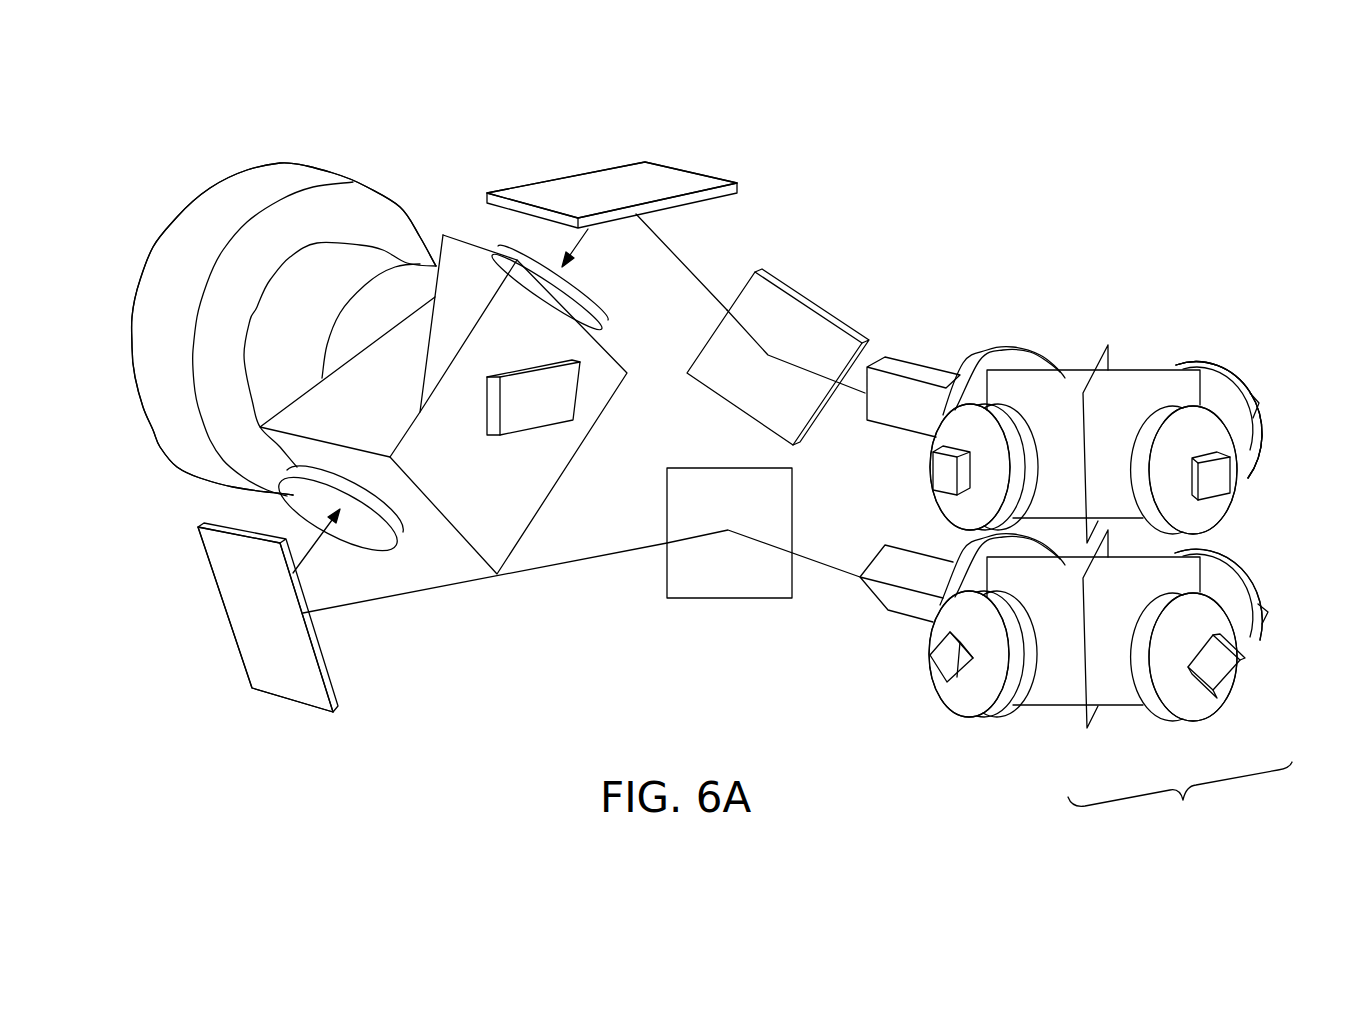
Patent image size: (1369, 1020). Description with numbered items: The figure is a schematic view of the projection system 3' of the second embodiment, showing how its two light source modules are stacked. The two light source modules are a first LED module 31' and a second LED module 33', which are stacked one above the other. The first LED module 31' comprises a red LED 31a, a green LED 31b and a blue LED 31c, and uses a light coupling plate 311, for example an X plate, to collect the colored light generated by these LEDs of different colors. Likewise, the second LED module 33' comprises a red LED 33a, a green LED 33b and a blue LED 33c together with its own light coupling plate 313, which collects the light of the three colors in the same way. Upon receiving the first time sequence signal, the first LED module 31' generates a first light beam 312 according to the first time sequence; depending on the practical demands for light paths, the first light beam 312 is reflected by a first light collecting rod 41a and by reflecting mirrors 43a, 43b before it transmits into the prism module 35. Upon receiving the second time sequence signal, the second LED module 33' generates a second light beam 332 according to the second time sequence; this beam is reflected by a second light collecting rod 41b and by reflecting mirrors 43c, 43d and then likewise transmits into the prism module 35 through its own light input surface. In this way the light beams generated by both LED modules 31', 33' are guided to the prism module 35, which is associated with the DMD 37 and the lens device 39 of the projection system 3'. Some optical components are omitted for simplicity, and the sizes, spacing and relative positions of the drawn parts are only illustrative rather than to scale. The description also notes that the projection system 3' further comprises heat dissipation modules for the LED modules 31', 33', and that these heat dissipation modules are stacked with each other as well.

The projection system 3' is at (712, 432).
The first LED module 31' is at (1096, 391).
The red LED 31a is at (1252, 398).
The green LED 31b is at (1192, 458).
The blue LED 31c is at (965, 456).
The light coupling plate 311 is at (1032, 383).
The first light beam 312 is at (580, 240).
The light coupling plate 313 is at (1183, 574).
The second LED module 33' is at (1110, 694).
The red LED 33a is at (1260, 640).
The green LED 33b is at (1222, 677).
The blue LED 33c is at (960, 678).
The second light beam 332 is at (313, 545).
The prism module 35 is at (467, 268).
The DMD 37 is at (543, 403).
The lens device 39 is at (177, 258).
The first light collecting rod 41a is at (927, 373).
The second light collecting rod 41b is at (908, 605).
The reflecting mirror 43a is at (773, 302).
The reflecting mirror 43b is at (660, 180).
The reflecting mirror 43c is at (712, 575).
The reflecting mirror 43d is at (278, 668).